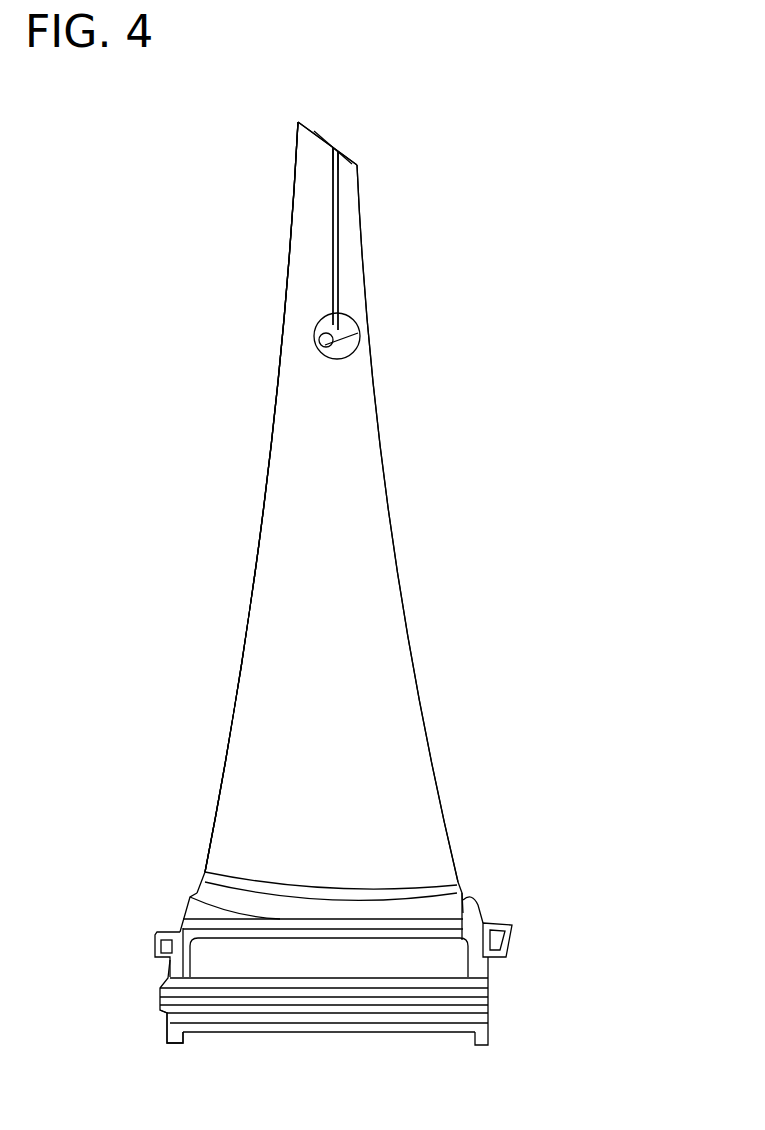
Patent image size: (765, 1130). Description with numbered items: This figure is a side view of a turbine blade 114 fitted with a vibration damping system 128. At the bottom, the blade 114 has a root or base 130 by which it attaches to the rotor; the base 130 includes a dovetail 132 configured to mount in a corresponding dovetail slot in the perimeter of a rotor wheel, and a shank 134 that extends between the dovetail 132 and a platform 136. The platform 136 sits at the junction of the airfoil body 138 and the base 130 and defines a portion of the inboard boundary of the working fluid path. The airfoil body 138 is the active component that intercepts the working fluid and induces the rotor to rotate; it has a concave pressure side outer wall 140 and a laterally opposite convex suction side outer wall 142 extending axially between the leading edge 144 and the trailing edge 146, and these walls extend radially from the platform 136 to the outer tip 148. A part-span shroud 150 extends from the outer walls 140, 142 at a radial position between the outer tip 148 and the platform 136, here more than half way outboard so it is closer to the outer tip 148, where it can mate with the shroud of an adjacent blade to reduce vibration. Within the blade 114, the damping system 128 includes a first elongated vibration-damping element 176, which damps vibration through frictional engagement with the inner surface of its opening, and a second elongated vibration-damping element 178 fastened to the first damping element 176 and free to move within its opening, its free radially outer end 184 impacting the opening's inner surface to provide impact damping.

The blade 114 is at (255, 230).
The suction side outer wall 142 is at (313, 128).
The outer tip 148 is at (327, 140).
The free radially outer end 184 is at (340, 148).
The second elongated vibration-damping element 178 is at (342, 199).
The vibration damping system 128 is at (360, 245).
The part-span shroud 150 is at (385, 312).
The first elongated vibration-damping element 176 is at (350, 338).
The leading edge 144 is at (272, 435).
The airfoil body 138 is at (280, 510).
The trailing edge 146 is at (388, 503).
The pressure side outer wall 140 is at (238, 740).
The platform 136 is at (187, 895).
The shank 134 is at (438, 965).
The base 130 is at (510, 1002).
The dovetail 132 is at (170, 1020).